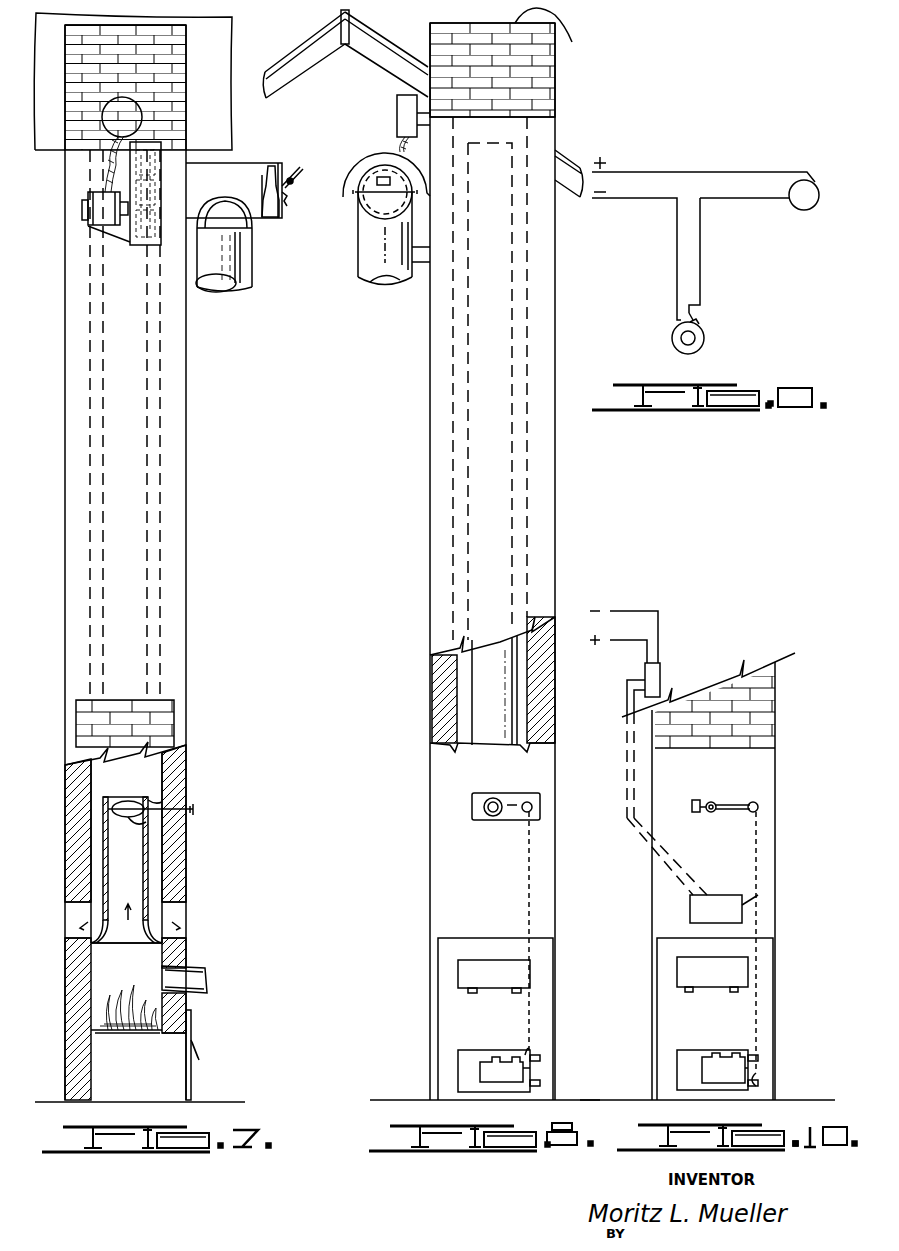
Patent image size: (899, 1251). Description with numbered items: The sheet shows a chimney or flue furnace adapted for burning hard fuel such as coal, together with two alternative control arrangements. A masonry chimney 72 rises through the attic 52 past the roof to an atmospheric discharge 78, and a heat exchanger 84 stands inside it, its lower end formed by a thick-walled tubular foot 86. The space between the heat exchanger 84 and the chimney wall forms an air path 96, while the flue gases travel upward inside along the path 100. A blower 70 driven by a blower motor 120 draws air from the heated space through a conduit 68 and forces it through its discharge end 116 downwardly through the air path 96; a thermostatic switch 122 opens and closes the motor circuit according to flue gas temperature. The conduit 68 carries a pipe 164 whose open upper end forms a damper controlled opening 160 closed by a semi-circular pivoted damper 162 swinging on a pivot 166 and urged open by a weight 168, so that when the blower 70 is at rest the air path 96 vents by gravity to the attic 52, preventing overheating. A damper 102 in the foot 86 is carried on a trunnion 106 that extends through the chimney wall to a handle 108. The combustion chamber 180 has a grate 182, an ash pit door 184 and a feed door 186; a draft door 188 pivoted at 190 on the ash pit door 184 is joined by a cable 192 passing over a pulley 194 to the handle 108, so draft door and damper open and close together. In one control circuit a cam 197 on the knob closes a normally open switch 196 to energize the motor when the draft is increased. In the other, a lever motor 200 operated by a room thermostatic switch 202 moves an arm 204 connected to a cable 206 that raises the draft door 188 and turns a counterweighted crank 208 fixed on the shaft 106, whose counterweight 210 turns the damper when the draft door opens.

In FIG. 8, the attic 52 is at (355, 88).
In FIG. 7, the conduit 68 is at (240, 258).
In FIG. 8, the conduit 68 is at (367, 280).
In FIG. 7, the blower 70 is at (162, 153).
In FIG. 7, the masonry chimney 72 is at (186, 664).
In FIG. 8, the masonry chimney 72 is at (556, 566).
In FIG. 10, the masonry chimney 72 is at (762, 756).
In FIG. 8, the atmospheric discharge 78 is at (556, 31).
In FIG. 7, the heat exchanger 84 is at (178, 752).
In FIG. 8, the heat exchanger 84 is at (482, 677).
In FIG. 7, the tubular foot 86 is at (80, 880).
In FIG. 7, the air path 96 is at (97, 858).
In FIG. 8, the air path 96 is at (470, 716).
In FIG. 7, the flue gas path 100 is at (150, 878).
In FIG. 7, the damper 102 is at (150, 811).
In FIG. 7, the trunnion 106 is at (160, 800).
In FIG. 10, the trunnion 106 is at (713, 802).
In FIG. 7, the handle 108 is at (196, 808).
In FIG. 8, the handle 108 is at (488, 818).
In FIG. 9, the handle 108 is at (672, 338).
In FIG. 8, the discharge end of blower 116 is at (410, 277).
In FIG. 7, the blower motor 120 is at (92, 210).
In FIG. 9, the blower motor 120 is at (806, 210).
In FIG. 7, the thermostatic switch 122 is at (142, 111).
In FIG. 8, the thermostatic switch 122 is at (397, 111).
In FIG. 7, the damper controlled opening 160 is at (290, 170).
In FIG. 7, the pivoted damper 162 is at (286, 188).
In FIG. 8, the pivoted damper 162 is at (393, 194).
In FIG. 7, the pipe 164 is at (251, 163).
In FIG. 7, the pivot 166 is at (267, 195).
In FIG. 8, the pivot 166 is at (362, 196).
In FIG. 7, the weight 168 is at (294, 181).
In FIG. 8, the weight 168 is at (383, 177).
In FIG. 7, the combustion chamber 180 is at (190, 960).
In FIG. 7, the grate 182 is at (112, 1040).
In FIG. 7, the ash pit door 184 is at (192, 1086).
In FIG. 8, the ash pit door 184 is at (478, 1055).
In FIG. 7, the feed door 186 is at (208, 986).
In FIG. 8, the feed door 186 is at (506, 968).
In FIG. 10, the feed door 186 is at (727, 966).
In FIG. 8, the draft door 188 is at (514, 1082).
In FIG. 10, the draft door 188 is at (728, 1082).
In FIG. 8, the pivot 190 is at (523, 1060).
In FIG. 8, the cable 192 is at (529, 890).
In FIG. 8, the pulley 194 is at (527, 818).
In FIG. 9, the switch 196 is at (699, 306).
In FIG. 9, the cam 197 is at (680, 352).
In FIG. 10, the lever motor 200 is at (690, 906).
In FIG. 10, the room thermostatic switch 202 is at (660, 679).
In FIG. 10, the arm 204 is at (760, 900).
In FIG. 10, the cable 206 is at (758, 966).
In FIG. 10, the counterweighted crank 208 is at (752, 806).
In FIG. 10, the counterweight 210 is at (694, 816).